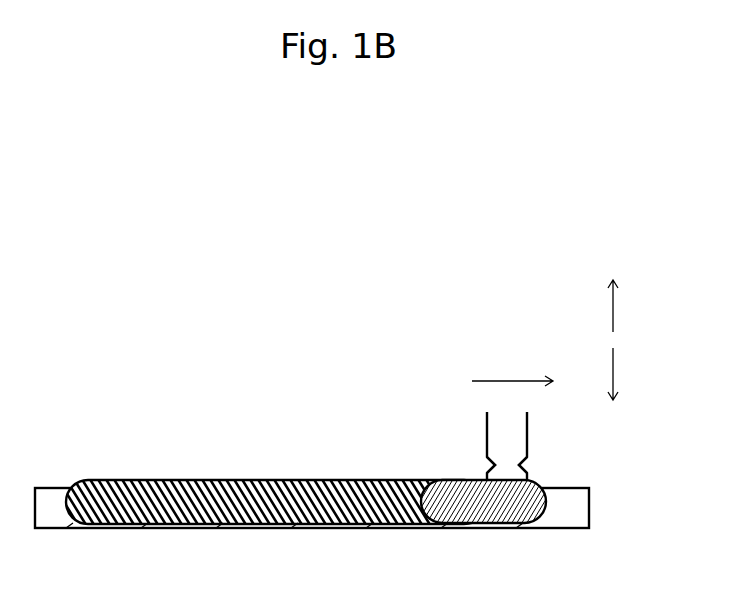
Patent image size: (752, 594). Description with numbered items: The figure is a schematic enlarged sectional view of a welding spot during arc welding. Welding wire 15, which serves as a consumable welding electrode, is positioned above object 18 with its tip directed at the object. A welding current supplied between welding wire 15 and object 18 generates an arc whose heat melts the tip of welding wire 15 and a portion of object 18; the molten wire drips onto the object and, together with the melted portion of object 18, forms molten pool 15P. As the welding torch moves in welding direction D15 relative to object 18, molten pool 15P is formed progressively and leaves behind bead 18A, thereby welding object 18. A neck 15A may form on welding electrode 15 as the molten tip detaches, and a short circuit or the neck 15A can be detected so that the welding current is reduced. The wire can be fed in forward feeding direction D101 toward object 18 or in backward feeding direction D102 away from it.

The object 18 is at (589, 500).
The bead 18A is at (227, 480).
The welding wire 15 is at (520, 431).
The neck 15A is at (527, 470).
The molten pool 15P is at (450, 480).
The welding direction D15 is at (513, 380).
The forward feeding direction D101 is at (613, 375).
The backward feeding direction D102 is at (613, 310).